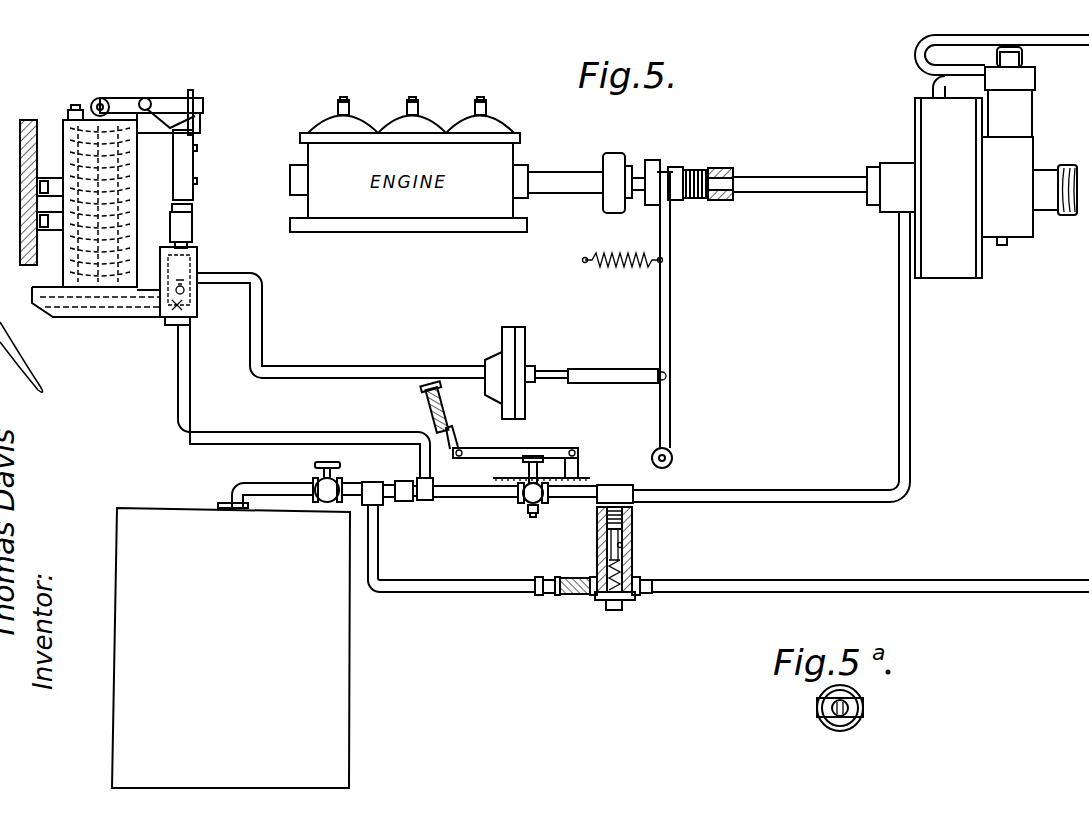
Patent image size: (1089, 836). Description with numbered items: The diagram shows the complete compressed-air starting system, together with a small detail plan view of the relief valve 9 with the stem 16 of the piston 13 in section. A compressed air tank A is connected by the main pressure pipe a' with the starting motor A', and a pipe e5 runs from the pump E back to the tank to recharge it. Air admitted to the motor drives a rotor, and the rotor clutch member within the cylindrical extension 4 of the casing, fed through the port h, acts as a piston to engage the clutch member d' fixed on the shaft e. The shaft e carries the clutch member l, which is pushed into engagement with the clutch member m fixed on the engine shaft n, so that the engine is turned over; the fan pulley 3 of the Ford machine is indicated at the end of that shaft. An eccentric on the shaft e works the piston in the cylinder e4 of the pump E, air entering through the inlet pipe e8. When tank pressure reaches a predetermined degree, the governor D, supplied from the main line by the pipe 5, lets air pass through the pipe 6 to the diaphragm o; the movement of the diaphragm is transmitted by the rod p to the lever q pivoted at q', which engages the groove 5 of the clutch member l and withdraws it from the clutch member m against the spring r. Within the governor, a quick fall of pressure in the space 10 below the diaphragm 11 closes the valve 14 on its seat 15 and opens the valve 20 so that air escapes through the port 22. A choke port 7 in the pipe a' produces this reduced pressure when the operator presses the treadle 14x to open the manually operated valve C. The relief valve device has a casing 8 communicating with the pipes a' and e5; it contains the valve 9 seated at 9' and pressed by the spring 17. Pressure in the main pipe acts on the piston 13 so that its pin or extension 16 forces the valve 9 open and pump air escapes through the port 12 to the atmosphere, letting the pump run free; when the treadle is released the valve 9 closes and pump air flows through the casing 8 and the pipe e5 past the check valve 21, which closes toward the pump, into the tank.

The fan pulley 3 is at (605, 205).
The extension of rotor casing 4 is at (890, 170).
The pipe to governor 5 is at (178, 392).
The air pipe 6 is at (330, 368).
The choke port 7 is at (405, 505).
The casing 8 is at (632, 560).
The valve 9 is at (594, 562).
The valve seat 9' is at (592, 535).
The space below diaphragm 10 is at (115, 318).
The diaphragm 11 is at (73, 318).
The port 12 is at (624, 545).
The piston 13 is at (632, 509).
The valve 14 is at (197, 308).
The treadle 14x is at (545, 443).
The valve seat 15 is at (200, 292).
The pin or extension 16 is at (630, 536).
The spring 17 is at (636, 602).
The valve 20 is at (168, 282).
The check valve 21 is at (580, 600).
The port 22 is at (197, 260).
The governor D is at (66, 140).
The compressed air tank A is at (231, 648).
The starting motor A' is at (948, 188).
The main air valve C is at (522, 505).
The pump E is at (1015, 237).
The engine shaft n is at (560, 180).
The clutch member m is at (629, 167).
The clutch member l is at (658, 160).
The spring r is at (708, 199).
The shaft e is at (797, 193).
The clutch member d' is at (853, 224).
The port h is at (900, 260).
The diaphragm o is at (522, 360).
The rod p is at (583, 383).
The lever q is at (642, 310).
The pivot q' is at (681, 461).
The main pressure pipe a' is at (493, 495).
The pump cylinder e4 is at (1025, 116).
The pipe e5 is at (478, 604).
The inlet pipe e8 is at (935, 86).